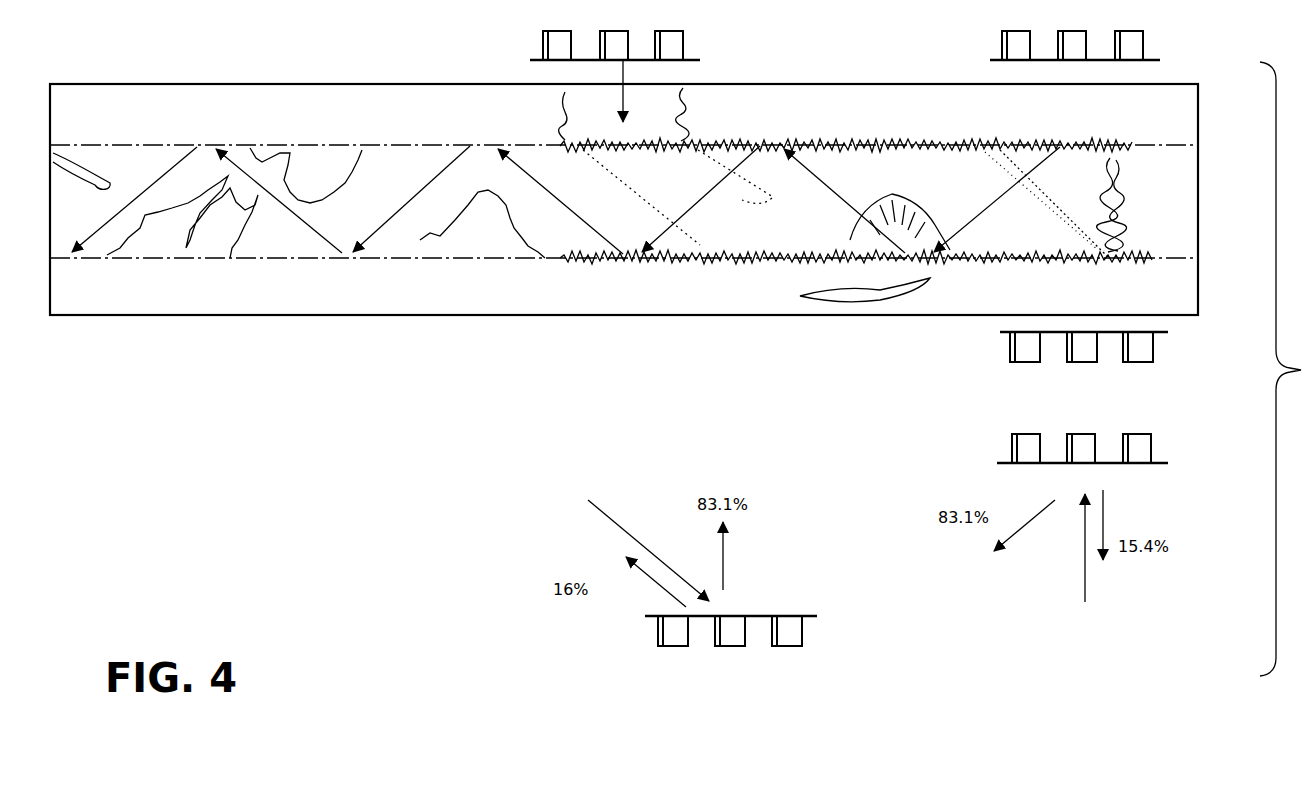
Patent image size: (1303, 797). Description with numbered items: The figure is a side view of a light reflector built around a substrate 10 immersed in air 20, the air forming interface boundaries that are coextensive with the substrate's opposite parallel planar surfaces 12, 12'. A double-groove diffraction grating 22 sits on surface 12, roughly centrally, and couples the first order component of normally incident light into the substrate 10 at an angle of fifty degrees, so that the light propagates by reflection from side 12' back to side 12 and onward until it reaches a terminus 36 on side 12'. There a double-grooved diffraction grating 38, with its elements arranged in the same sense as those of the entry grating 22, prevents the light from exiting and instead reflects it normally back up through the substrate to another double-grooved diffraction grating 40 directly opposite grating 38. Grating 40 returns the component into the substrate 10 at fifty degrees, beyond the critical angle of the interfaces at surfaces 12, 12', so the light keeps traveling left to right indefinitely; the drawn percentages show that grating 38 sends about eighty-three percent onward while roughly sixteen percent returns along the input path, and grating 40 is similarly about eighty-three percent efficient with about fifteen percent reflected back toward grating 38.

The substrate 10 is at (1198, 187).
The planar surface 12 is at (697, 154).
The planar surface 12' is at (500, 283).
The air 20 is at (1200, 118).
The double-groove diffraction grating 22 is at (663, 137).
The terminus 36 is at (1118, 253).
The double-grooved diffraction grating 38 is at (1020, 273).
The double-grooved diffraction grating 40 is at (1035, 136).